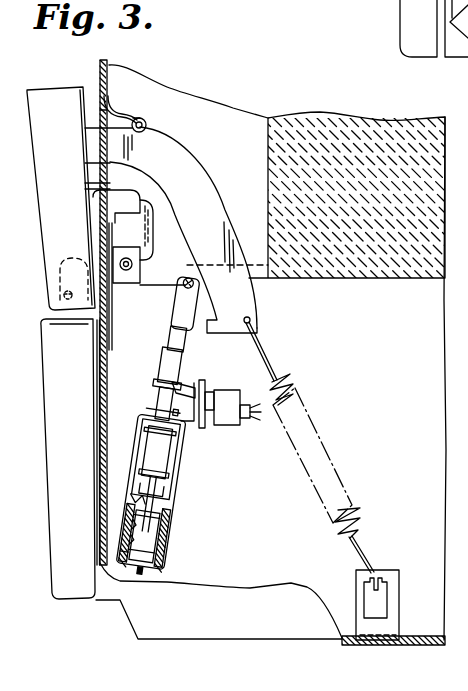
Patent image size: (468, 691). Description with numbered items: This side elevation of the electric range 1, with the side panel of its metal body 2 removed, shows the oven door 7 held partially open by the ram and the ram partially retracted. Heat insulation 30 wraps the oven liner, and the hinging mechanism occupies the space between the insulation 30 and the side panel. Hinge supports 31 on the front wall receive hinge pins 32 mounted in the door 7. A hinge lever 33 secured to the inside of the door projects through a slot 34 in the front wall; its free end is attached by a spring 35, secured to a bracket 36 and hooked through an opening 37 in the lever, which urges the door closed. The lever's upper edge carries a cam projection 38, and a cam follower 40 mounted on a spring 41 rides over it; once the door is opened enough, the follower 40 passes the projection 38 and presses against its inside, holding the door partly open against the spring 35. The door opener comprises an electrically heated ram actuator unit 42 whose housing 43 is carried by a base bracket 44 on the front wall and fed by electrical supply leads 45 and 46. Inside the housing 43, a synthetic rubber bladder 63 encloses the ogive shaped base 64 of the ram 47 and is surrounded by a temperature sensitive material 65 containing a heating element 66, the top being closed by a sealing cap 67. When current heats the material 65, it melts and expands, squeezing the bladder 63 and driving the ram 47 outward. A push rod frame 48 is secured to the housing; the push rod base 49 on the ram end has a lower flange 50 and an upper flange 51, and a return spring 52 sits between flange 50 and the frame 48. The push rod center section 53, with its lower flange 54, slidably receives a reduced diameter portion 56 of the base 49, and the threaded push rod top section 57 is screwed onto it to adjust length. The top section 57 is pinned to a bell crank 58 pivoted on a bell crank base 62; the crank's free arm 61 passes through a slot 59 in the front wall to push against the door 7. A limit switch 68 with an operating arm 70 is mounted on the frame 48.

The electric range 1 is at (98, 66).
The metal body 2 is at (256, 622).
The oven door 7 is at (52, 142).
The heat insulation 30 is at (353, 276).
The hinge support 31 is at (72, 259).
The hinge pin 32 is at (64, 294).
The hinge lever 33 is at (173, 191).
The slot 34 is at (101, 112).
The spring 35 is at (358, 519).
The bracket 36 is at (357, 576).
The opening 37 is at (246, 316).
The projection 38 is at (137, 120).
The cam follower 40 is at (148, 125).
The spring 41 is at (109, 100).
The ram actuator unit 42 is at (146, 575).
The housing 43 is at (122, 530).
The base bracket 44 is at (116, 502).
The electrical supply lead 45 is at (166, 519).
The electrical supply lead 46 is at (159, 553).
The ram 47 is at (162, 481).
The push rod frame 48 is at (137, 436).
The push rod base 49 is at (164, 393).
The flange 50 is at (150, 470).
The flange 51 is at (158, 413).
The return spring 52 is at (177, 434).
The push rod center section 53 is at (171, 338).
The lower flange 54 is at (160, 374).
The reduced diameter portion 56 is at (157, 382).
The push rod top section 57 is at (178, 297).
The bell crank 58 is at (153, 233).
The slot 59 is at (100, 183).
The free arm 61 is at (93, 199).
The bell crank base 62 is at (127, 283).
The synthetic rubber bladder 63 is at (168, 517).
The ogive shaped base 64 is at (158, 537).
The temperature sensitive material 65 is at (157, 559).
The heating element 66 is at (106, 544).
The sealing cap 67 is at (135, 488).
The limit switch 68 is at (232, 390).
The operating arm 70 is at (184, 389).